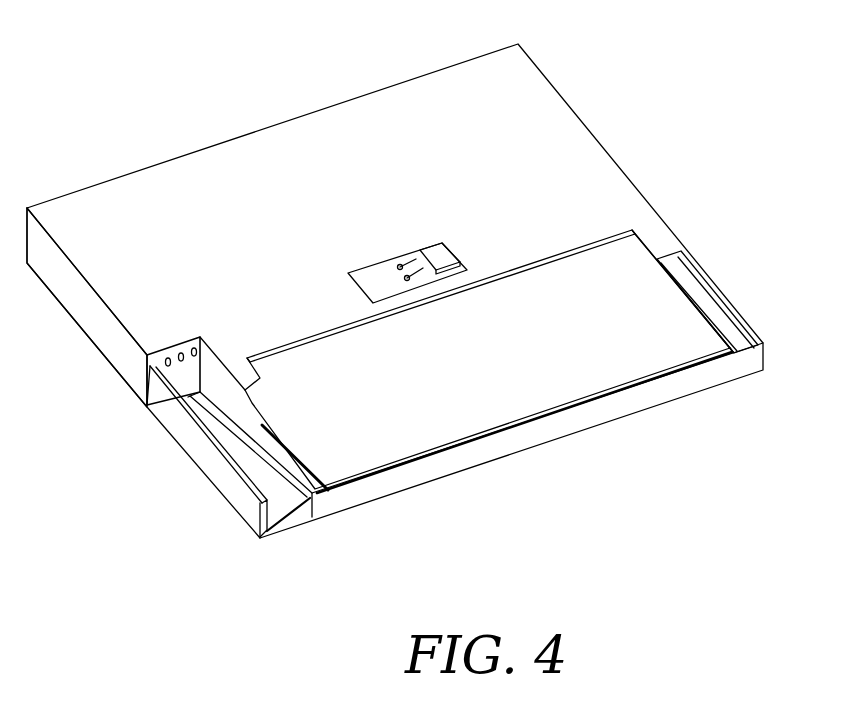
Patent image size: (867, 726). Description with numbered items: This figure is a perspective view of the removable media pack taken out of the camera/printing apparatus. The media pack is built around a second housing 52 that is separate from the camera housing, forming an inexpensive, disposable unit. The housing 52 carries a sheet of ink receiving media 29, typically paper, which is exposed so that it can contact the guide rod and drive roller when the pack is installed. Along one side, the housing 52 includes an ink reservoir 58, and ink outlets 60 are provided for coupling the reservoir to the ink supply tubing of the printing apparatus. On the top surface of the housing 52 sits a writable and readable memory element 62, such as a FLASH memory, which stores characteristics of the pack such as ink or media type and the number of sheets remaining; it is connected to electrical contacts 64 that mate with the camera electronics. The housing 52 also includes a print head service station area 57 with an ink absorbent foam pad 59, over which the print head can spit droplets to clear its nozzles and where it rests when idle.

The second housing 52 is at (328, 137).
The ink reservoir 58 is at (97, 326).
The print head service station area 57 is at (206, 398).
The ink absorbent foam pad 59 is at (284, 514).
The ink outlets 60 is at (178, 371).
The ink receiving media 29 is at (493, 376).
The memory element 62 is at (441, 257).
The electrical contacts 64 is at (395, 264).